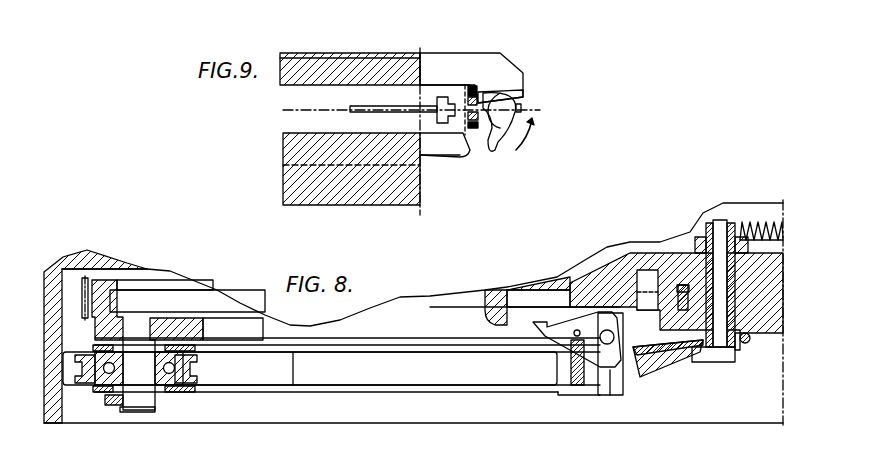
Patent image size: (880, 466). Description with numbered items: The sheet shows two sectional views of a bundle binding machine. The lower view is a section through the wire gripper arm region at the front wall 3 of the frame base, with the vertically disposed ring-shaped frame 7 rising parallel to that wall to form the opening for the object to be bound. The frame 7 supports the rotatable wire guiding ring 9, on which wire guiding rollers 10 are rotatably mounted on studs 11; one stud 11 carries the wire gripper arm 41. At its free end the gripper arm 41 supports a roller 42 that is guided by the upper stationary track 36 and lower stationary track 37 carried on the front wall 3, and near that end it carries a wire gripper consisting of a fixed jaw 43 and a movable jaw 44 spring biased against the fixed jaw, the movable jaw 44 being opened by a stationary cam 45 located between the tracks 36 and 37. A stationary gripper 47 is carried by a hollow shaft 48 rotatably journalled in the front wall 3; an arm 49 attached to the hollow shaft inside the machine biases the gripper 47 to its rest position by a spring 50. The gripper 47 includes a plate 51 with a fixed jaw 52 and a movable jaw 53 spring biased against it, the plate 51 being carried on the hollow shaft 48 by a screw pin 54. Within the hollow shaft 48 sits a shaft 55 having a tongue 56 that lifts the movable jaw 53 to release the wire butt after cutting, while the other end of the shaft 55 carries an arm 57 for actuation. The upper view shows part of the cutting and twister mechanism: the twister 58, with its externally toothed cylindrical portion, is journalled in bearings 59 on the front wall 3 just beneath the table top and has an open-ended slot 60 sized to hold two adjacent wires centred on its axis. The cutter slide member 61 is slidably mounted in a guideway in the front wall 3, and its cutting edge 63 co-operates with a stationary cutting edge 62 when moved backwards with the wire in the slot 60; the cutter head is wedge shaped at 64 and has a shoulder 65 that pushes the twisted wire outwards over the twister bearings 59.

In FIG. 8, the front wall 3 is at (767, 333).
In FIG. 8, the ring-shaped frame 7 is at (55, 334).
In FIG. 8, the wire guiding ring 9 is at (105, 283).
In FIG. 8, the wire guiding roller 10 is at (83, 358).
In FIG. 8, the stud 11 is at (118, 395).
In FIG. 8, the upper stationary track 36 is at (527, 300).
In FIG. 8, the lower stationary track 37 is at (448, 302).
In FIG. 8, the wire gripper arm 41 is at (380, 388).
In FIG. 8, the roller 42 is at (598, 262).
In FIG. 8, the fixed jaw 43 is at (612, 380).
In FIG. 8, the movable jaw 44 is at (567, 335).
In FIG. 8, the stationary cam 45 is at (492, 317).
In FIG. 8, the stationary gripper 47 is at (668, 372).
In FIG. 8, the hollow shaft 48 is at (763, 303).
In FIG. 8, the arm 49 is at (702, 235).
In FIG. 8, the spring 50 is at (758, 220).
In FIG. 8, the plate 51 is at (645, 350).
In FIG. 8, the fixed jaw 52 is at (643, 378).
In FIG. 8, the movable jaw 53 is at (688, 365).
In FIG. 8, the screw pin 54 is at (747, 343).
In FIG. 8, the shaft 55 is at (722, 267).
In FIG. 8, the tongue 56 is at (725, 357).
In FIG. 8, the arm 57 is at (710, 220).
In FIG. 9, the twister 58 is at (505, 147).
In FIG. 9, the bearing 59 is at (433, 70).
In FIG. 9, the slot 60 is at (471, 130).
In FIG. 9, the slide member 61 is at (378, 110).
In FIG. 9, the stationary cutting edge 62 is at (455, 152).
In FIG. 9, the cutting edge 63 is at (487, 90).
In FIG. 9, the wedge shaped head 64 is at (512, 107).
In FIG. 9, the shoulder 65 is at (481, 85).